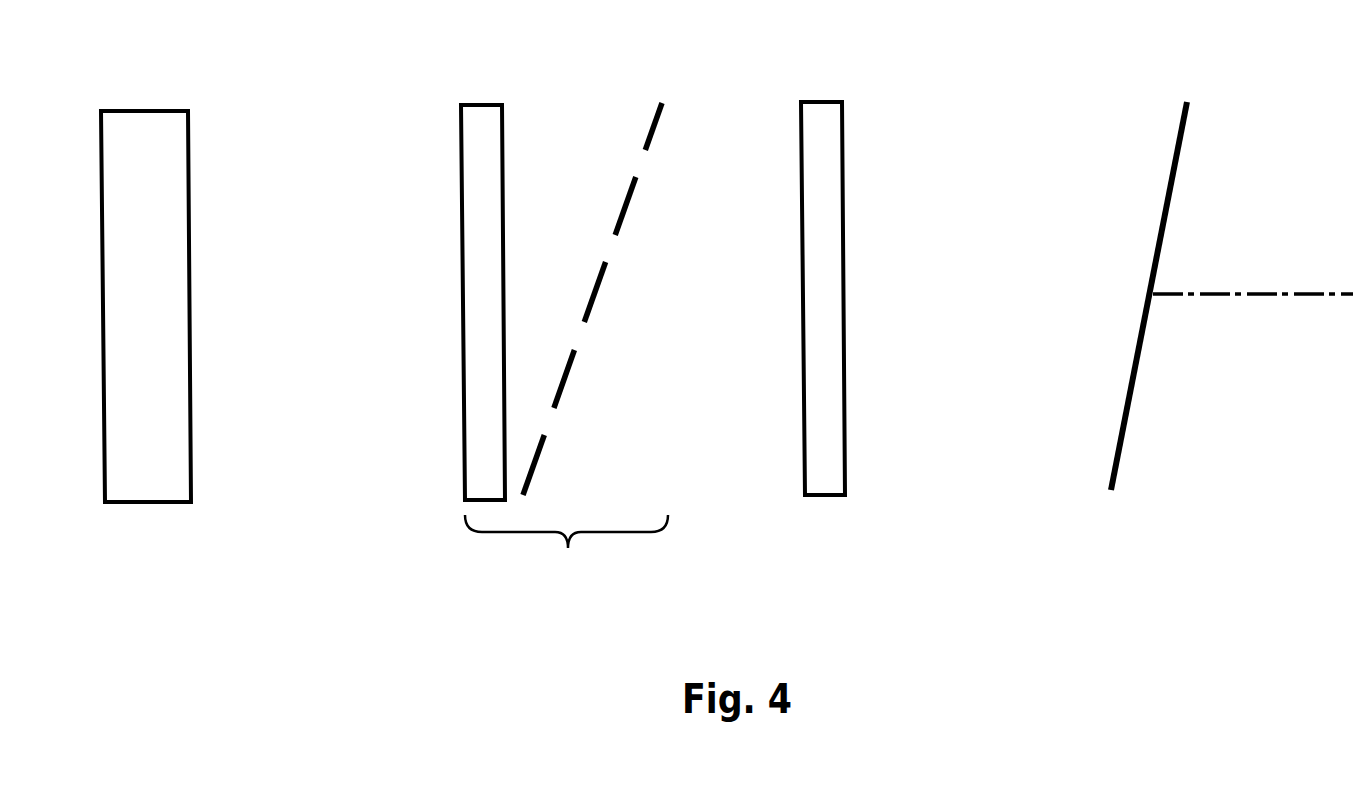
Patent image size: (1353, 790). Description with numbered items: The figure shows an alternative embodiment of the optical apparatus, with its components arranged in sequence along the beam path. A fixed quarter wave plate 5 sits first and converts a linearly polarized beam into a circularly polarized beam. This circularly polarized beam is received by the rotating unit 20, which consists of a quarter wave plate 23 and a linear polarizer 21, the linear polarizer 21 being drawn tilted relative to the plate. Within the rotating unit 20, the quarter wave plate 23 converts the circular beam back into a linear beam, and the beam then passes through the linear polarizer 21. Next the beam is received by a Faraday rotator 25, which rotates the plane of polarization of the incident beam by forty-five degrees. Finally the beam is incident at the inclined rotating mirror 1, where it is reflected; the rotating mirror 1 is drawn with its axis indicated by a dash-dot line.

The rotating mirror 1 is at (1184, 142).
The fixed quarter wave plate 5 is at (143, 110).
The rotating unit 20 is at (566, 556).
The linear polarizer 21 is at (657, 120).
The quarter wave plate 23 is at (478, 105).
The Faraday rotator 25 is at (822, 102).